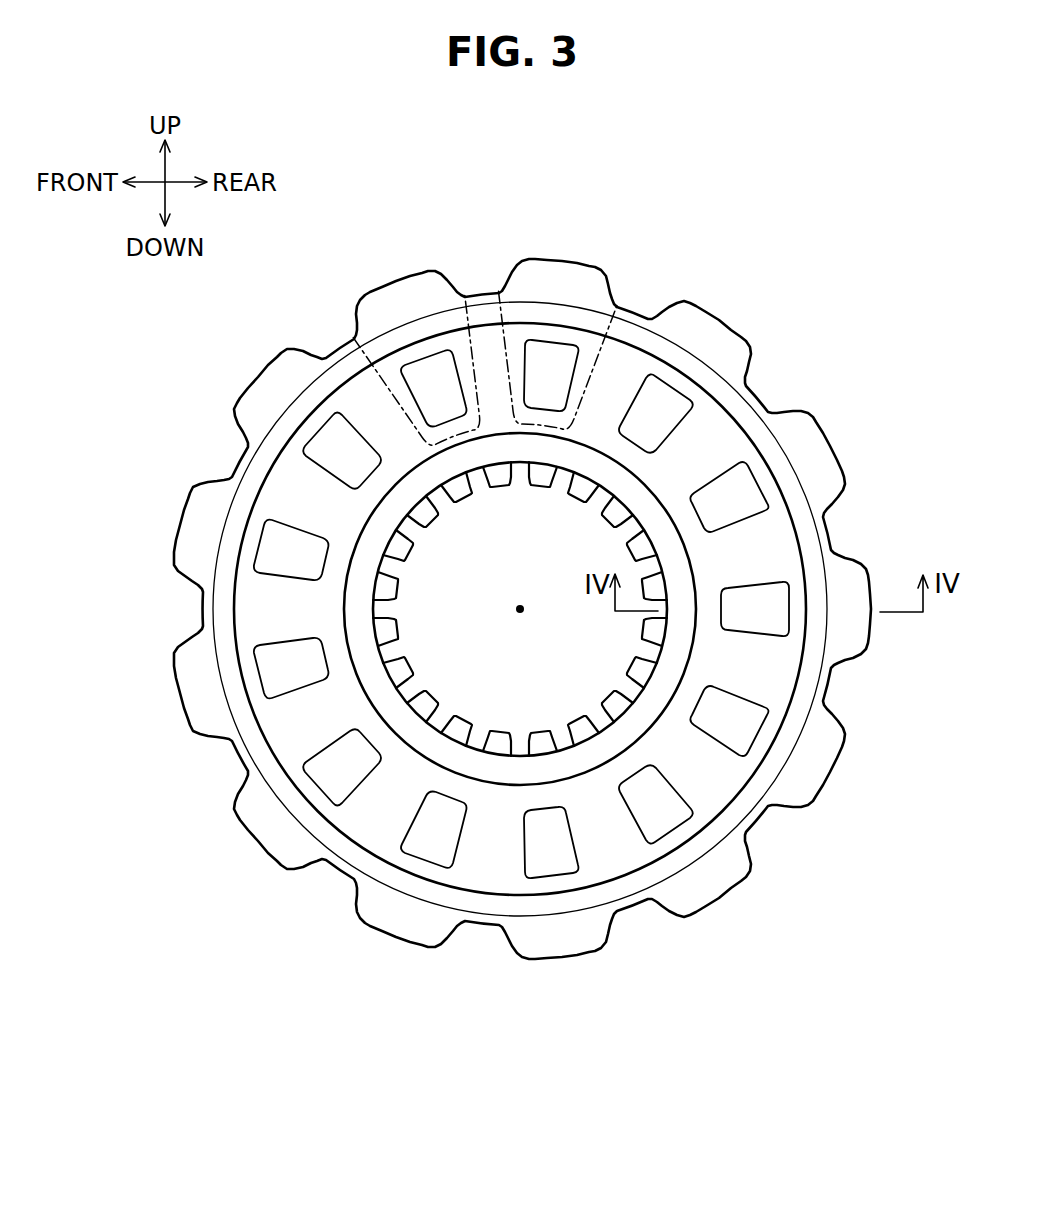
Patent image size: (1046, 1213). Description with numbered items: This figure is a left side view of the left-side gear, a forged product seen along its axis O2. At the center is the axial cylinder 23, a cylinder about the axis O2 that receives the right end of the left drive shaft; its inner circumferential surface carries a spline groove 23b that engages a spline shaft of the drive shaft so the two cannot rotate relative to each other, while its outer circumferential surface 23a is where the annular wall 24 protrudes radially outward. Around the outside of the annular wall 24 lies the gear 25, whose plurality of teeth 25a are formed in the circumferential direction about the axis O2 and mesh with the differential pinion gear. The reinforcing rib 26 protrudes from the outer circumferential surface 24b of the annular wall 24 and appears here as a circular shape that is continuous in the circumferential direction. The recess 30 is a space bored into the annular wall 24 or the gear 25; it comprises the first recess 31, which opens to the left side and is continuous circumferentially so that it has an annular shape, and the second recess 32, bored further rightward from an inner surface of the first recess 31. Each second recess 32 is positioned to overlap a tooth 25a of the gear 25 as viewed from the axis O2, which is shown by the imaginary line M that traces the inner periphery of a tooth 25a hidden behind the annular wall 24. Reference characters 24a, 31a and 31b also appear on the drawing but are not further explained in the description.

The axial cylinder 23 is at (377, 563).
The outer circumferential surface of the axial cylinder 23a is at (587, 773).
The spline groove 23b is at (538, 478).
The annular wall 24 is at (357, 850).
The first surface of plate portion 24a is at (697, 450).
The outer circumferential surface of the annular wall 24b is at (513, 648).
The gear 25 is at (563, 272).
The tooth 25a is at (185, 526).
The reinforcing rib 26 is at (335, 355).
The recess 30 is at (630, 361).
The first recess 31 is at (712, 780).
The outer surface of annular plate 31a is at (498, 648).
The inner periphery of annular plate 31b is at (520, 609).
The second recess 32 is at (343, 453).
The axis O2 is at (520, 607).
The imaginary line M is at (498, 292).